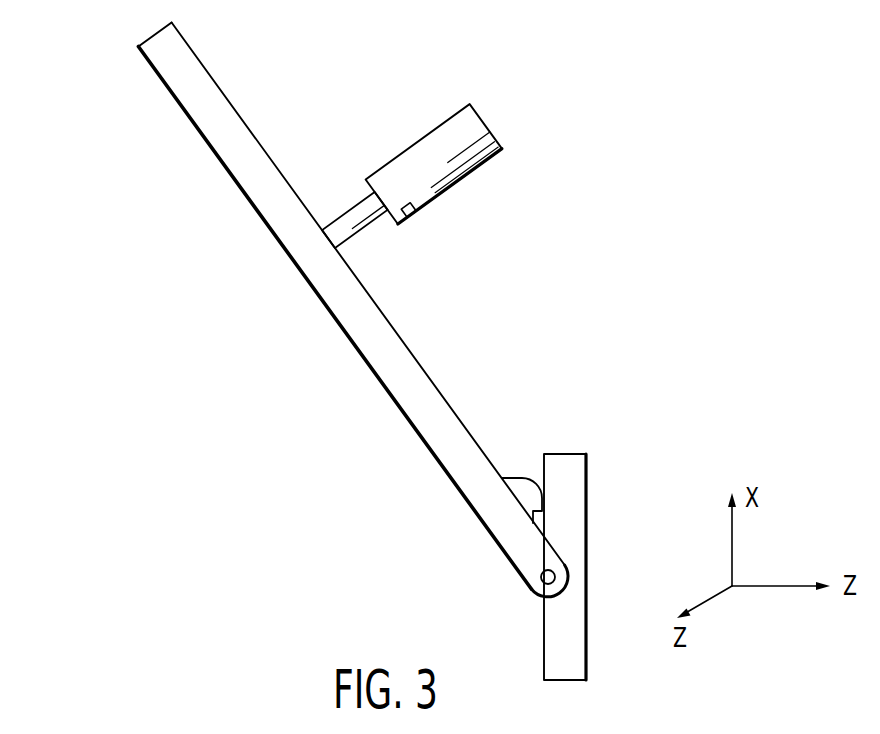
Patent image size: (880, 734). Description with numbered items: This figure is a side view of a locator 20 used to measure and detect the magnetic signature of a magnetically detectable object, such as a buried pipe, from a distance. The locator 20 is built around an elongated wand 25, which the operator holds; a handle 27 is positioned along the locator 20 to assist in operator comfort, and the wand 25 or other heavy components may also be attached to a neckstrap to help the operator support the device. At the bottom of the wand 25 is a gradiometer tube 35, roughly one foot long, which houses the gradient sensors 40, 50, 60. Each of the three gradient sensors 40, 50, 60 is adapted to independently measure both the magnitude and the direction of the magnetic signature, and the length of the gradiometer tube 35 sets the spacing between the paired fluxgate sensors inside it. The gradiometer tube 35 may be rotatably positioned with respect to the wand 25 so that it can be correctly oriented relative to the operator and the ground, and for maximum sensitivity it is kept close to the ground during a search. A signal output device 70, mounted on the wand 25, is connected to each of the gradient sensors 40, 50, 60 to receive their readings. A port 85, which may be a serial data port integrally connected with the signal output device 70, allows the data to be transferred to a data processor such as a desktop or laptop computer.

The locator 20 is at (146, 181).
The wand 25 is at (357, 333).
The handle 27 is at (355, 232).
The gradiometer tube 35 is at (585, 497).
The gradient sensor 40 is at (597, 554).
The gradient sensor 50 is at (597, 554).
The gradient sensor 60 is at (641, 599).
The signal output device 70 is at (475, 128).
The port 85 is at (413, 213).